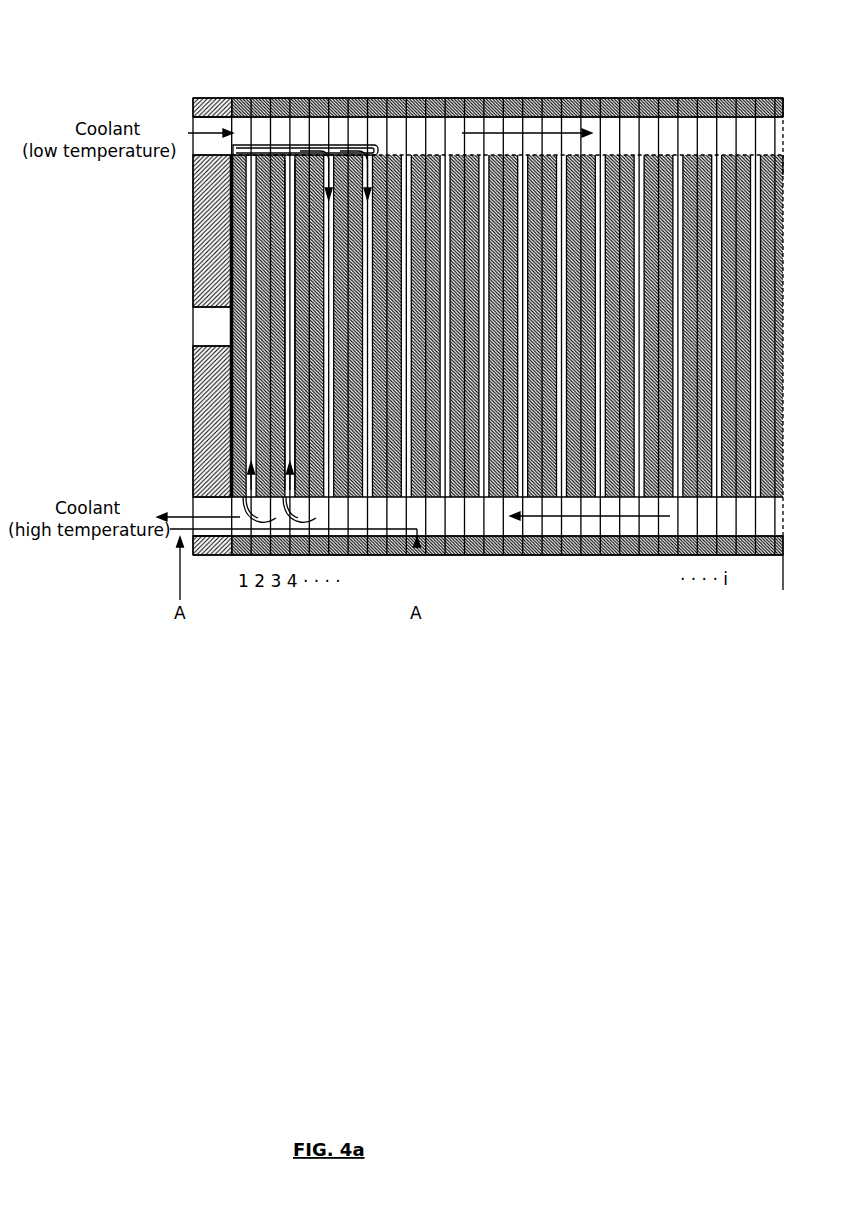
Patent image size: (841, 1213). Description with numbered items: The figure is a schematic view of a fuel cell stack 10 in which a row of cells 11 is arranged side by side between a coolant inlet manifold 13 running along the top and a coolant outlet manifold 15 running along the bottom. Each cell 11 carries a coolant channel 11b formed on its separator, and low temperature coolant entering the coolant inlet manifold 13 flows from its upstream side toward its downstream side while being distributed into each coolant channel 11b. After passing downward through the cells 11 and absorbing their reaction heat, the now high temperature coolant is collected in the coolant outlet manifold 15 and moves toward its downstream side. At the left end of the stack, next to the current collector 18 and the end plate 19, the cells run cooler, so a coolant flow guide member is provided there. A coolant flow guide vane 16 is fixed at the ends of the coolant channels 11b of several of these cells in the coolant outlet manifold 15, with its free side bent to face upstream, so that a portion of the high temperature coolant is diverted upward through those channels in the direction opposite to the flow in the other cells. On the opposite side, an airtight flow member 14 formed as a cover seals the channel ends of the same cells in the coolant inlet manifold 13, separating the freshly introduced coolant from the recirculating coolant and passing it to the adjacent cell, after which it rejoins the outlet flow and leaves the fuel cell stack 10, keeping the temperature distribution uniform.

The fuel cell stack 10 is at (708, 92).
The cell 11 is at (549, 160).
The coolant channel 11b is at (256, 301).
The coolant inlet manifold 13 is at (352, 143).
The airtight flow member 14 is at (263, 145).
The coolant outlet manifold 15 is at (474, 520).
The coolant flow guide vane 16 is at (243, 503).
The current collector 18 is at (230, 402).
The end plate 19 is at (203, 365).